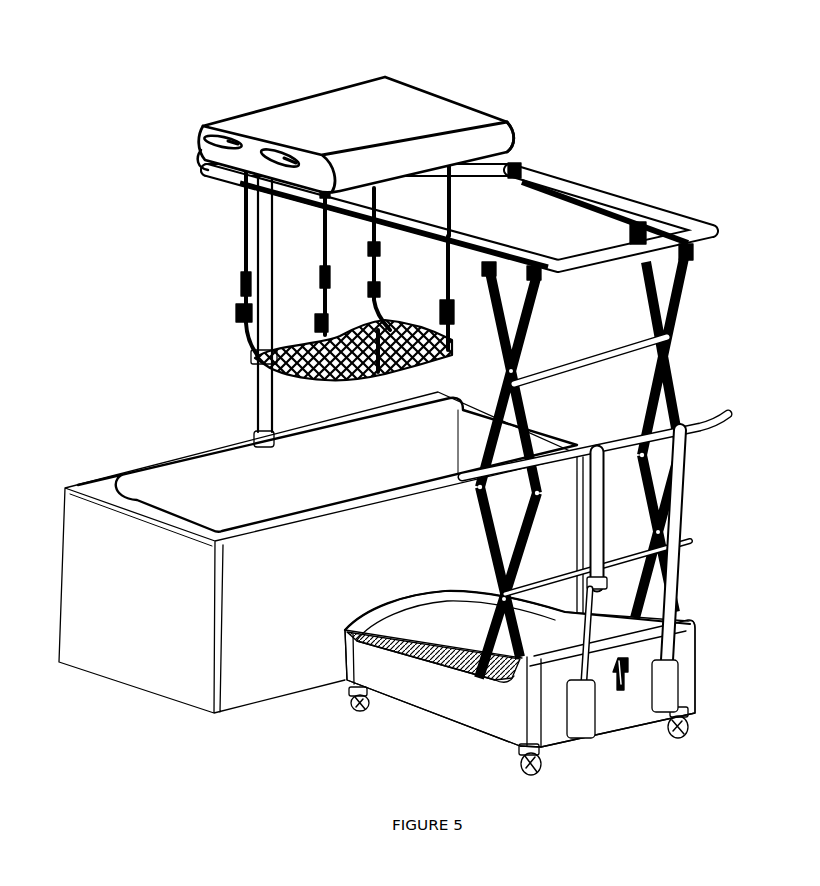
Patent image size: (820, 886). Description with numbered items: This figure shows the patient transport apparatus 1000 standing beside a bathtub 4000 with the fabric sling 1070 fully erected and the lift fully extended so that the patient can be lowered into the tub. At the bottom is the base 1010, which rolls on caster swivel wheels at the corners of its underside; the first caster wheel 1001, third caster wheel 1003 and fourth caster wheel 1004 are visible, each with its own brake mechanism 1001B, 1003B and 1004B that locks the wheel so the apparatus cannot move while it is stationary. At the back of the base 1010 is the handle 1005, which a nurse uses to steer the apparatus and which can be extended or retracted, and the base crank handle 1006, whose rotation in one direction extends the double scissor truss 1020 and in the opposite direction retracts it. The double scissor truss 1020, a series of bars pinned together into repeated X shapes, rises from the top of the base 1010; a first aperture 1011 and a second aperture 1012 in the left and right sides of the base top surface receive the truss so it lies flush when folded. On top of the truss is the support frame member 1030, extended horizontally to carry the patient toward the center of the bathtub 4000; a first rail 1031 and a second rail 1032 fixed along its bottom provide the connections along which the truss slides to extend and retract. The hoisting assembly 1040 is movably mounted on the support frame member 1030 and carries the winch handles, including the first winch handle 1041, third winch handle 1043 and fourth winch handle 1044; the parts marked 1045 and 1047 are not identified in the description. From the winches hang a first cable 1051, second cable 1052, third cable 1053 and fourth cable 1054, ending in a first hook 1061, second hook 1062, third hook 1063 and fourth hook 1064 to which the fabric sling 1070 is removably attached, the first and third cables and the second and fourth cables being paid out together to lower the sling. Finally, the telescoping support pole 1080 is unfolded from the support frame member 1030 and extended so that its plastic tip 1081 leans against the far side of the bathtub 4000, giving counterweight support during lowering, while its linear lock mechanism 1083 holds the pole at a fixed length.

The patient transport apparatus 1000 is at (458, 422).
The first caster wheel 1001 is at (352, 708).
The brake mechanism 1001B is at (348, 694).
The third caster wheel 1003 is at (541, 777).
The brake mechanism 1003B is at (528, 756).
The fourth caster wheel 1004 is at (672, 740).
The brake mechanism 1004B is at (692, 713).
The handle 1005 is at (614, 576).
The base crank handle 1006 is at (637, 688).
The base 1010 is at (527, 712).
The first aperture 1011 is at (397, 635).
The second aperture 1012 is at (600, 623).
The double scissor truss 1020 is at (680, 310).
The support frame member 1030 is at (460, 272).
The first rail 1031 is at (469, 262).
The second rail 1032 is at (612, 218).
The hoisting assembly 1040 is at (351, 145).
The first winch handle 1041 is at (201, 148).
The third winch handle 1043 is at (260, 158).
The fourth winch handle 1044 is at (513, 112).
The housing end tab 1045 is at (206, 166).
The strap connector 1047 is at (327, 194).
The first cable 1051 is at (241, 254).
The second cable 1052 is at (380, 195).
The third cable 1053 is at (322, 243).
The fourth cable 1054 is at (453, 192).
The first hook 1061 is at (233, 310).
The second hook 1062 is at (371, 289).
The third hook 1063 is at (318, 322).
The fourth hook 1064 is at (442, 311).
The fabric sling 1070 is at (390, 378).
The telescoping support pole 1080 is at (224, 303).
The plastic tip 1081 is at (254, 432).
The linear lock mechanism 1083 is at (252, 357).
The bathtub 4000 is at (321, 552).